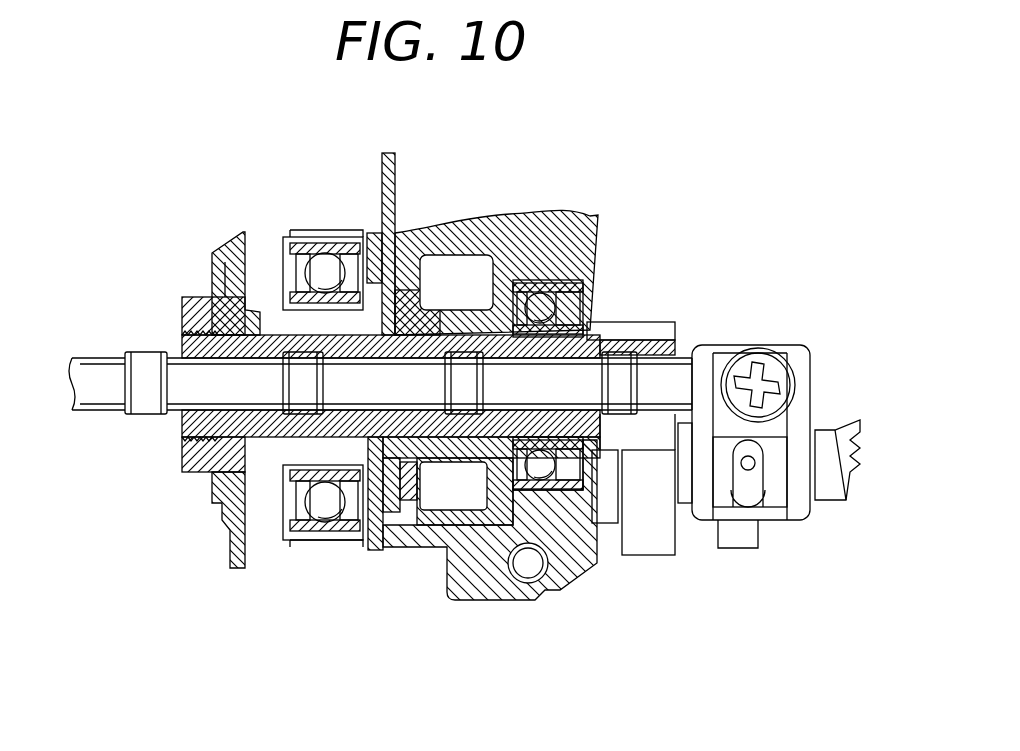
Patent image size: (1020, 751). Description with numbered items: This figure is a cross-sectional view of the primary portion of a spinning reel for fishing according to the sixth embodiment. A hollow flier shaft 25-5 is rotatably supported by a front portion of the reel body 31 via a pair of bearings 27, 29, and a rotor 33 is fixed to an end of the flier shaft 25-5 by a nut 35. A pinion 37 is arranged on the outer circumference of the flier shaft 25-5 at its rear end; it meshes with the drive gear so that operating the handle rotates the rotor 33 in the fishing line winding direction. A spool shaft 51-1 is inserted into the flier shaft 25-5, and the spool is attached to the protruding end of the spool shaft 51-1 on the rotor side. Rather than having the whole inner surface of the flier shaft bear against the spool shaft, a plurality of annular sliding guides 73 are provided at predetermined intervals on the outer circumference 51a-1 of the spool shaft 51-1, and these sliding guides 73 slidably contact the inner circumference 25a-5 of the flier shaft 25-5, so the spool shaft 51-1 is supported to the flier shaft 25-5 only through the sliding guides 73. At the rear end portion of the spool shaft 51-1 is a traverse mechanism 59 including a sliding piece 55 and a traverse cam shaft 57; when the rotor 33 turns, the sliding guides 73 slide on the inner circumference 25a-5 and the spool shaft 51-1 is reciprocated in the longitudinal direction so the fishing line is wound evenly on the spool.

The flier shaft 25-5 is at (255, 344).
The bearing 27 is at (330, 264).
The reel body 31 is at (500, 222).
The bearing 29 is at (545, 296).
The sliding guide 73 is at (136, 414).
The pinion 37 is at (648, 330).
The outer circumference of the spool shaft 51a-1 is at (700, 357).
The nut 35 is at (182, 300).
The traverse cam shaft 57 is at (850, 428).
The rotor 33 is at (222, 540).
The spool shaft 51-1 is at (548, 396).
The inner circumference of the flier shaft 25a-5 is at (636, 402).
The traverse mechanism 59 is at (741, 536).
The sliding piece 55 is at (785, 430).